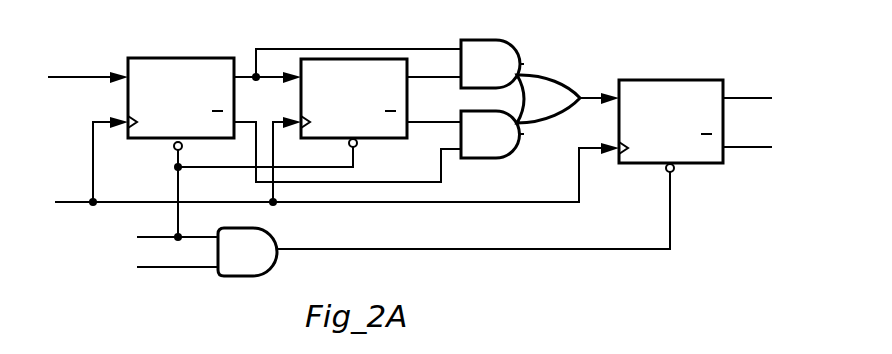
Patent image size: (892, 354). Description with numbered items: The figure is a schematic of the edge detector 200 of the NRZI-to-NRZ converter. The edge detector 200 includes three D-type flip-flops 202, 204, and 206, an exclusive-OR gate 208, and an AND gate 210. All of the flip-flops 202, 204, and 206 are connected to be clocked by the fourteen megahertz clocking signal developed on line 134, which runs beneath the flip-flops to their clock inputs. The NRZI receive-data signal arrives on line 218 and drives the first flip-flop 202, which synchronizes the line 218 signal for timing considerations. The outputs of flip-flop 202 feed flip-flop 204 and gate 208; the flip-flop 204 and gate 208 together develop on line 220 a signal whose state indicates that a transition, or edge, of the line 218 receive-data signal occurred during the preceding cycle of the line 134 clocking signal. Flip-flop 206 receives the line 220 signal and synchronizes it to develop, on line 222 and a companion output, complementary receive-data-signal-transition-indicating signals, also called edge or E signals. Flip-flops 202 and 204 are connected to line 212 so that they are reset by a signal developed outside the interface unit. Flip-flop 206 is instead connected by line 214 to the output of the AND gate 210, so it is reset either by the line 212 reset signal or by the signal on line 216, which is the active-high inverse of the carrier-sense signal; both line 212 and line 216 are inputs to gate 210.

The edge detector 200 is at (487, 252).
The D-type flip-flop 202 is at (200, 58).
The D-type flip-flop 204 is at (377, 139).
The D-type flip-flop 206 is at (680, 80).
The exclusive-OR gate 208 is at (528, 127).
The AND gate 210 is at (263, 255).
The line 212 is at (177, 180).
The line 214 is at (736, 147).
The line 216 is at (172, 268).
The line 218 is at (81, 76).
The line 220 is at (590, 96).
The line 222 is at (743, 97).
The line 134 is at (80, 203).